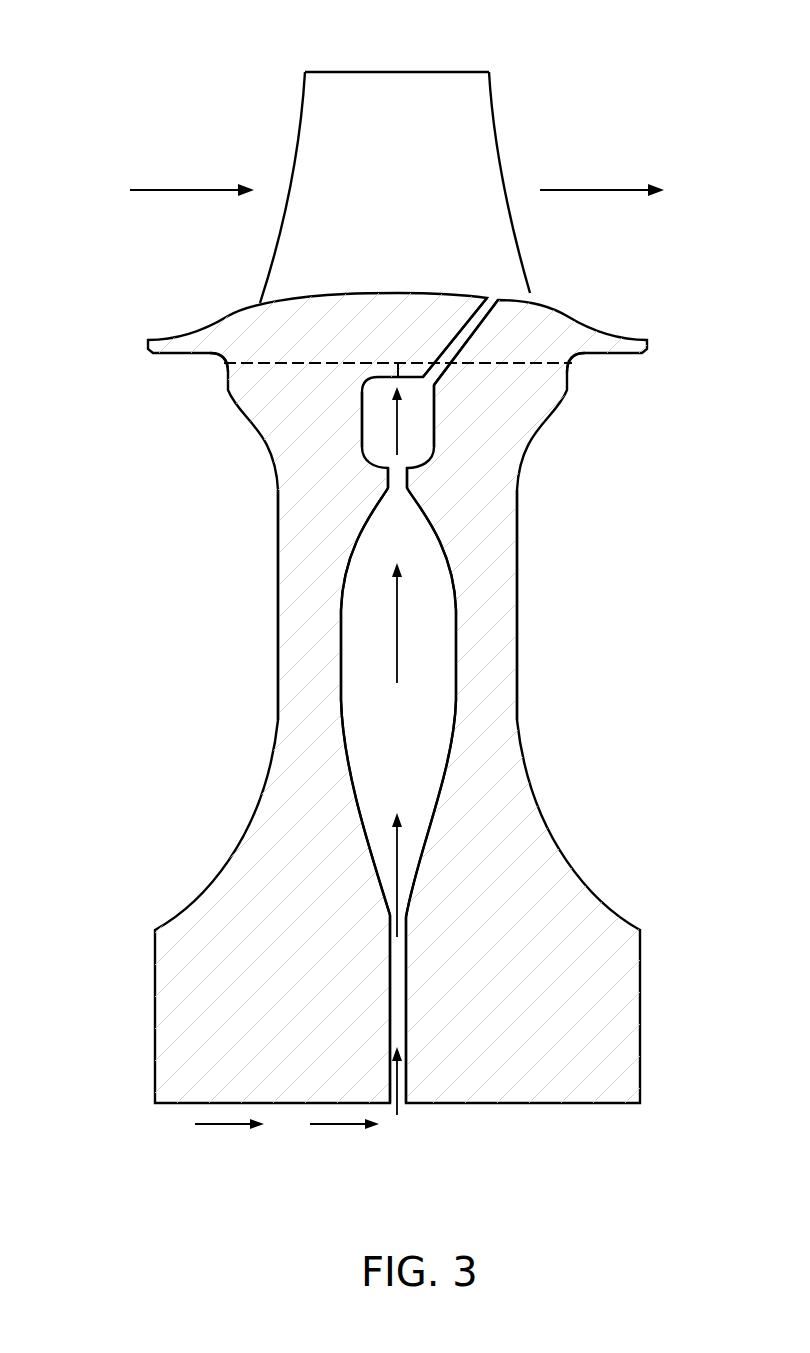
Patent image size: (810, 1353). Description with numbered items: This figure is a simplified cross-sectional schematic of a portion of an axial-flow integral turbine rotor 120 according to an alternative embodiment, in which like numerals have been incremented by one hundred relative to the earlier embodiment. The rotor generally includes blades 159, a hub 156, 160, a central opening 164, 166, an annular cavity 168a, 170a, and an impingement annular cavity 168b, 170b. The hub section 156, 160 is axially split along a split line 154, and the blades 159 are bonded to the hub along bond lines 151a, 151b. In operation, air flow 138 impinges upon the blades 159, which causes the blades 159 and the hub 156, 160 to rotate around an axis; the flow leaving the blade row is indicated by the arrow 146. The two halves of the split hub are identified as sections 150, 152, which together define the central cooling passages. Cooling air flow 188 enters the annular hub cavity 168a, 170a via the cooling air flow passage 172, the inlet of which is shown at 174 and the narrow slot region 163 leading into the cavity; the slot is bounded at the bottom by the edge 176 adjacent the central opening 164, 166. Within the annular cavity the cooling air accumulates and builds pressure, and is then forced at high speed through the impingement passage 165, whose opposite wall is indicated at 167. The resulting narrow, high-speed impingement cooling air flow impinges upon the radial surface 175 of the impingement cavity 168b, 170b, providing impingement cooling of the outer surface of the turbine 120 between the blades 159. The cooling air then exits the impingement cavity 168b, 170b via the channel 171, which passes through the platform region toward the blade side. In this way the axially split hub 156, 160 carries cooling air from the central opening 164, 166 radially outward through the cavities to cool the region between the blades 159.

The axial-flow integral turbine rotor 120 is at (226, 86).
The blades 159 is at (396, 72).
The air flow 138 is at (186, 190).
The exhaust flow 146 is at (596, 190).
The split line 154 is at (392, 348).
The radial surface 175 is at (399, 375).
The channel 171 is at (482, 325).
The bond line 151a is at (246, 363).
The bond line 151b is at (549, 363).
The impingement annular cavity 168b is at (377, 432).
The impingement annular cavity 170b is at (418, 432).
The neck wall 167 is at (388, 475).
The impingement passage 165 is at (407, 475).
The internal cooling cavity 163 is at (407, 489).
The annular cavity 168a is at (355, 645).
The annular cavity 170a is at (440, 645).
The hub 156 is at (278, 662).
The hub 160 is at (517, 662).
The cooling air flow 188 is at (400, 843).
The slot inlet 174 is at (405, 915).
The cooling air flow passage 172 is at (390, 1000).
The central opening 164 is at (290, 1127).
The slot edge 176 is at (408, 1100).
The central opening 166 is at (535, 1125).
The first root section 150 is at (389, 1150).
The second root section 152 is at (640, 1150).